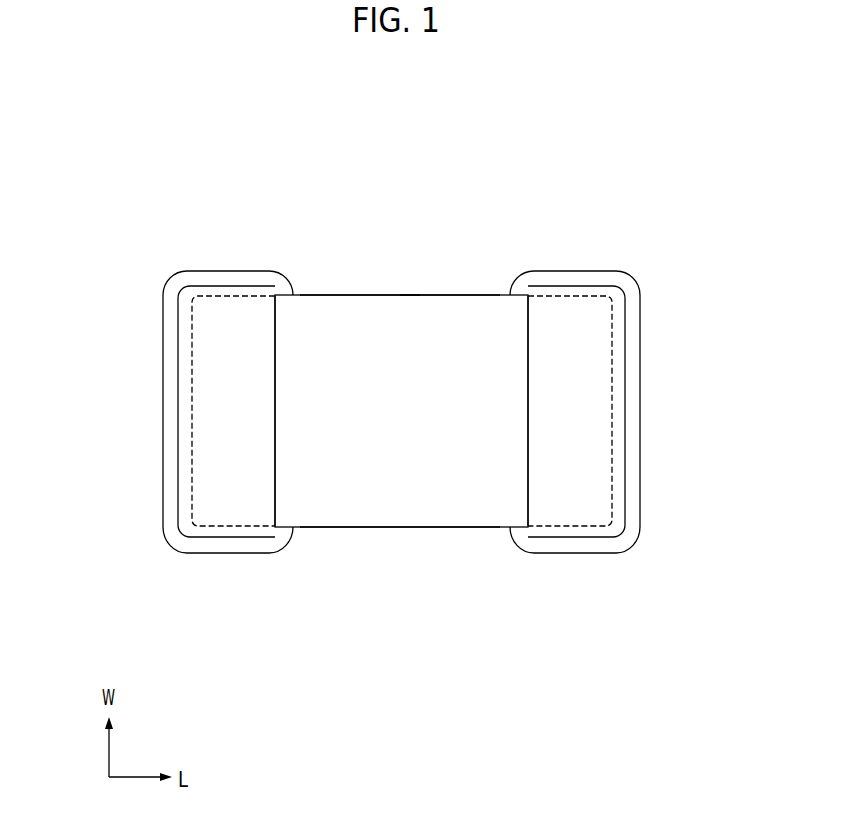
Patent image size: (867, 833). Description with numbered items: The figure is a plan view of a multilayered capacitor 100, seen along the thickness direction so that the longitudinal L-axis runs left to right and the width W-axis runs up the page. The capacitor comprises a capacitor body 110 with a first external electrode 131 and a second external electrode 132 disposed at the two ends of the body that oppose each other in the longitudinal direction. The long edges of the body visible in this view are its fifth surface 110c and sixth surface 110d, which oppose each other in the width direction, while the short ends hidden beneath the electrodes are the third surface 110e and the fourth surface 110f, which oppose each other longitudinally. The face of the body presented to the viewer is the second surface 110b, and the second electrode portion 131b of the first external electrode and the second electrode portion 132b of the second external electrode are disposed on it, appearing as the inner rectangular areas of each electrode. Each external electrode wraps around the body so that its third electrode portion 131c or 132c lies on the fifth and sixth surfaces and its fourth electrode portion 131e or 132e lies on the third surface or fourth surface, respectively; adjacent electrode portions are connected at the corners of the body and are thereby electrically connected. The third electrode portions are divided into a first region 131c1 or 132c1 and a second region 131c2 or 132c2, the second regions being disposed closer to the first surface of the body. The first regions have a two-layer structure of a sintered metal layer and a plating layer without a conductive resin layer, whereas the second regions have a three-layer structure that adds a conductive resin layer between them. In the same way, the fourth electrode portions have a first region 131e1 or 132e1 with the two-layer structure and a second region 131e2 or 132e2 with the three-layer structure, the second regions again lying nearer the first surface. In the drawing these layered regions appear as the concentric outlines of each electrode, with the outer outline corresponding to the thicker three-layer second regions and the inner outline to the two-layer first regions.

The multilayered capacitor 100 is at (656, 228).
The capacitor body 110 is at (368, 535).
The second surface 110b is at (361, 308).
The fifth surface 110c is at (398, 528).
The sixth surface 110d is at (435, 295).
The third surface 110e is at (192, 385).
The fourth surface 110f is at (612, 402).
The first external electrode 131 is at (166, 272).
The second electrode portion 131b is at (263, 457).
The third electrode portion 131c is at (282, 203).
The first region 131c1 is at (242, 286).
The second region 131c2 is at (215, 270).
The fourth electrode portion 131e is at (88, 450).
The first region 131e1 is at (178, 452).
The second region 131e2 is at (163, 497).
The second external electrode 132 is at (650, 274).
The second electrode portion 132b is at (533, 440).
The third electrode portion 132c is at (627, 210).
The first region 132c1 is at (590, 286).
The second region 132c2 is at (555, 271).
The fourth electrode portion 132e is at (708, 310).
The first region 132e1 is at (625, 322).
The second region 132e2 is at (640, 350).